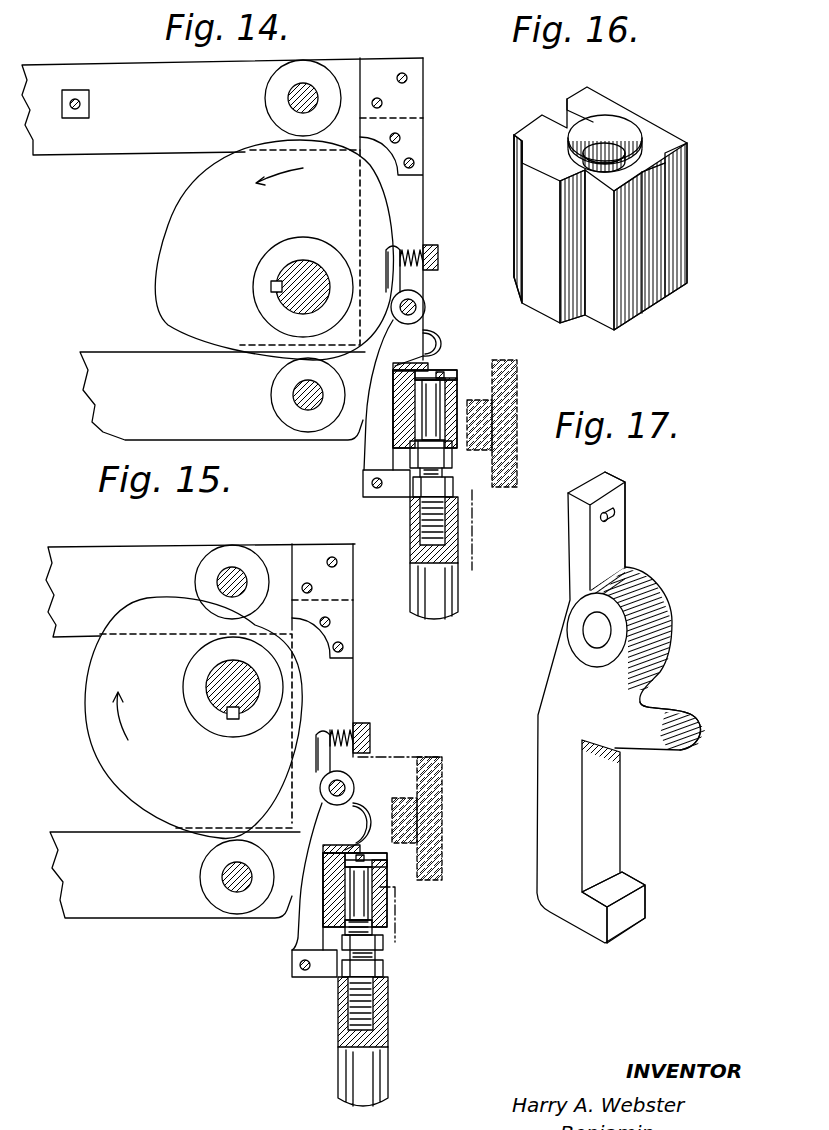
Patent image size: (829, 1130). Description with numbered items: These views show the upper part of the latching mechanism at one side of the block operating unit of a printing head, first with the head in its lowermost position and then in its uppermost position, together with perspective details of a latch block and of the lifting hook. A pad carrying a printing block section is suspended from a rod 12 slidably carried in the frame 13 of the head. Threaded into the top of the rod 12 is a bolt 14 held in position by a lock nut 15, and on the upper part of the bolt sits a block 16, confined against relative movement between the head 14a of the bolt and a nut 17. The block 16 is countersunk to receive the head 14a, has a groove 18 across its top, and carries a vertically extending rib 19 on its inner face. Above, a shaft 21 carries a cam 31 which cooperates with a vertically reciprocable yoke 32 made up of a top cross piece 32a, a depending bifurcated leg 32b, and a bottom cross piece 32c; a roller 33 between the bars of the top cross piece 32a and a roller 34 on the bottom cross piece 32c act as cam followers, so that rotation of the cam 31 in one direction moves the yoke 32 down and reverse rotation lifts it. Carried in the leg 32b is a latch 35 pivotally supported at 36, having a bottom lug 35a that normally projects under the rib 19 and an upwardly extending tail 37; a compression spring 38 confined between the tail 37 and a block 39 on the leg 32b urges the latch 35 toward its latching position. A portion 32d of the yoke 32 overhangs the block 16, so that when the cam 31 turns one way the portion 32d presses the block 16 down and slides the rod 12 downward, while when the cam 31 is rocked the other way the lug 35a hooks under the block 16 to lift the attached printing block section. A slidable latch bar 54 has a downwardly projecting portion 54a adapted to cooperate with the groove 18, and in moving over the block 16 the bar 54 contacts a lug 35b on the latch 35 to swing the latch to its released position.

In FIG. 14, the rod 12 is at (452, 620).
In FIG. 15, the rod 12 is at (388, 1090).
In FIG. 14, the frame 13 is at (476, 541).
In FIG. 15, the frame 13 is at (444, 790).
In FIG. 14, the bolt 14 is at (420, 485).
In FIG. 15, the bolt 14 is at (378, 956).
In FIG. 14, the head of the bolt 14a is at (446, 376).
In FIG. 15, the head of the bolt 14a is at (385, 866).
In FIG. 14, the lock nut 15 is at (455, 487).
In FIG. 15, the lock nut 15 is at (386, 970).
In FIG. 14, the block 16 is at (458, 395).
In FIG. 15, the block 16 is at (389, 912).
In FIG. 16, the block 16 is at (676, 242).
In FIG. 14, the nut 17 is at (452, 458).
In FIG. 15, the nut 17 is at (358, 901).
In FIG. 15, the groove 18 is at (376, 853).
In FIG. 16, the groove 18 is at (655, 165).
In FIG. 14, the rib 19 is at (395, 405).
In FIG. 16, the rib 19 is at (530, 229).
In FIG. 14, the shaft 21 is at (280, 284).
In FIG. 15, the shaft 21 is at (220, 703).
In FIG. 14, the cam 31 is at (274, 250).
In FIG. 15, the cam 31 is at (116, 763).
In FIG. 15, the yoke 32 is at (70, 547).
In FIG. 14, the top cross piece 32a is at (222, 113).
In FIG. 15, the top cross piece 32a is at (65, 592).
In FIG. 14, the depending bifurcated leg 32b is at (418, 200).
In FIG. 15, the depending bifurcated leg 32b is at (346, 675).
In FIG. 14, the bottom cross piece 32c is at (222, 396).
In FIG. 15, the bottom cross piece 32c is at (141, 912).
In FIG. 14, the overhanging portion of the yoke 32d is at (432, 364).
In FIG. 15, the overhanging portion of the yoke 32d is at (352, 848).
In FIG. 14, the cam follower roller 33 is at (305, 77).
In FIG. 15, the cam follower roller 33 is at (200, 579).
In FIG. 14, the cam follower roller 34 is at (278, 400).
In FIG. 15, the cam follower roller 34 is at (210, 879).
In FIG. 14, the latch 35 is at (372, 430).
In FIG. 15, the latch 35 is at (306, 907).
In FIG. 17, the latch 35 is at (665, 660).
In FIG. 14, the bottom lug 35a is at (363, 480).
In FIG. 15, the bottom lug 35a is at (320, 930).
In FIG. 17, the bottom lug 35a is at (640, 902).
In FIG. 14, the lug 35b is at (438, 344).
In FIG. 15, the lug 35b is at (366, 824).
In FIG. 17, the lug 35b is at (688, 730).
In FIG. 14, the pivot 36 is at (417, 307).
In FIG. 15, the pivot 36 is at (346, 788).
In FIG. 14, the tail 37 is at (393, 250).
In FIG. 15, the tail 37 is at (322, 730).
In FIG. 17, the tail 37 is at (618, 506).
In FIG. 14, the compression spring 38 is at (406, 256).
In FIG. 15, the compression spring 38 is at (343, 730).
In FIG. 14, the block 39 is at (440, 264).
In FIG. 15, the block 39 is at (371, 740).
In FIG. 14, the latch bar 54 is at (496, 420).
In FIG. 15, the latch bar 54 is at (412, 812).
In FIG. 14, the downwardly projecting portion 54a is at (500, 447).
In FIG. 15, the downwardly projecting portion 54a is at (404, 820).